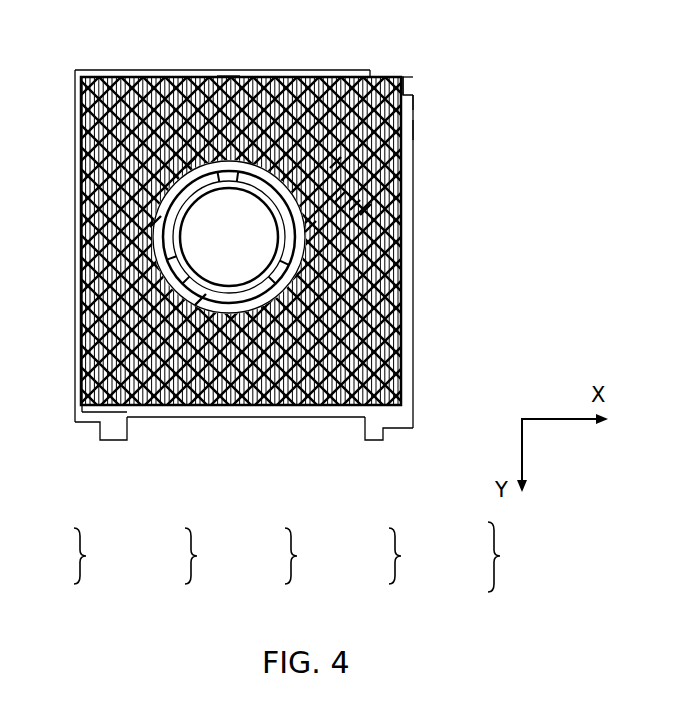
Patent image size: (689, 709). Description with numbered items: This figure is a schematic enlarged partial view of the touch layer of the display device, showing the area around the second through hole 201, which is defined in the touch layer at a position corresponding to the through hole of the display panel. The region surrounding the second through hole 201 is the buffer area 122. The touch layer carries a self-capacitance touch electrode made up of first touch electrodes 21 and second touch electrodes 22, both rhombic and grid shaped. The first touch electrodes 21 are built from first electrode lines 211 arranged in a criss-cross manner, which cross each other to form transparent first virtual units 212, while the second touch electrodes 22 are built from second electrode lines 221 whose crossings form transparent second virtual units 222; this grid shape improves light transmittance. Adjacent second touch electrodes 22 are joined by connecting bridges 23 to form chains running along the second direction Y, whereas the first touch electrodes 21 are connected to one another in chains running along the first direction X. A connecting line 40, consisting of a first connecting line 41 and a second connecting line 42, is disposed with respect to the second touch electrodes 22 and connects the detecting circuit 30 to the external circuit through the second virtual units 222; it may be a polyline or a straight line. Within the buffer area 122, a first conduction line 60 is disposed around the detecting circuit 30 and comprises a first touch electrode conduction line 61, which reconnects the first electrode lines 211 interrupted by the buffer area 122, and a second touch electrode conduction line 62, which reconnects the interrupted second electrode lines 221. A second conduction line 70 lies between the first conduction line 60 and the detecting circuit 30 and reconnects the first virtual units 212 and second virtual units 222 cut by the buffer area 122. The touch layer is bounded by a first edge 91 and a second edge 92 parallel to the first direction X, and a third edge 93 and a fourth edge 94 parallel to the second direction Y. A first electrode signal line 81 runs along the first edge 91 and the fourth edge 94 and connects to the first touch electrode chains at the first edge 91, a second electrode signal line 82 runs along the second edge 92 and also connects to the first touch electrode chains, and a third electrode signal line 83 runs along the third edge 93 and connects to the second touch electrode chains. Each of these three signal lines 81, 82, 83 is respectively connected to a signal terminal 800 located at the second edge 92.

The first touch electrode 21 is at (226, 384).
The first electrode line 211 is at (360, 215).
The first virtual unit 212 is at (335, 202).
The second touch electrode 22 is at (310, 323).
The second electrode line 221 is at (410, 100).
The second virtual unit 222 is at (408, 128).
The connecting bridge 23 is at (290, 100).
The detecting circuit 30 is at (330, 168).
The connecting line 40 is at (240, 365).
The first connecting line 41 is at (205, 168).
The second connecting line 42 is at (245, 100).
The first conduction line 60 is at (217, 76).
The first touch electrode conduction line 61 is at (185, 168).
The second touch electrode conduction line 62 is at (305, 232).
The second conduction line 70 is at (290, 275).
The first electrode signal line 81 is at (96, 76).
The second electrode signal line 82 is at (215, 408).
The third electrode signal line 83 is at (412, 385).
The first edge 91 is at (397, 76).
The second edge 92 is at (267, 410).
The third edge 93 is at (403, 82).
The fourth edge 94 is at (75, 97).
The buffer area 122 is at (283, 258).
The second through hole 201 is at (275, 298).
The signal terminal 800 is at (110, 420).